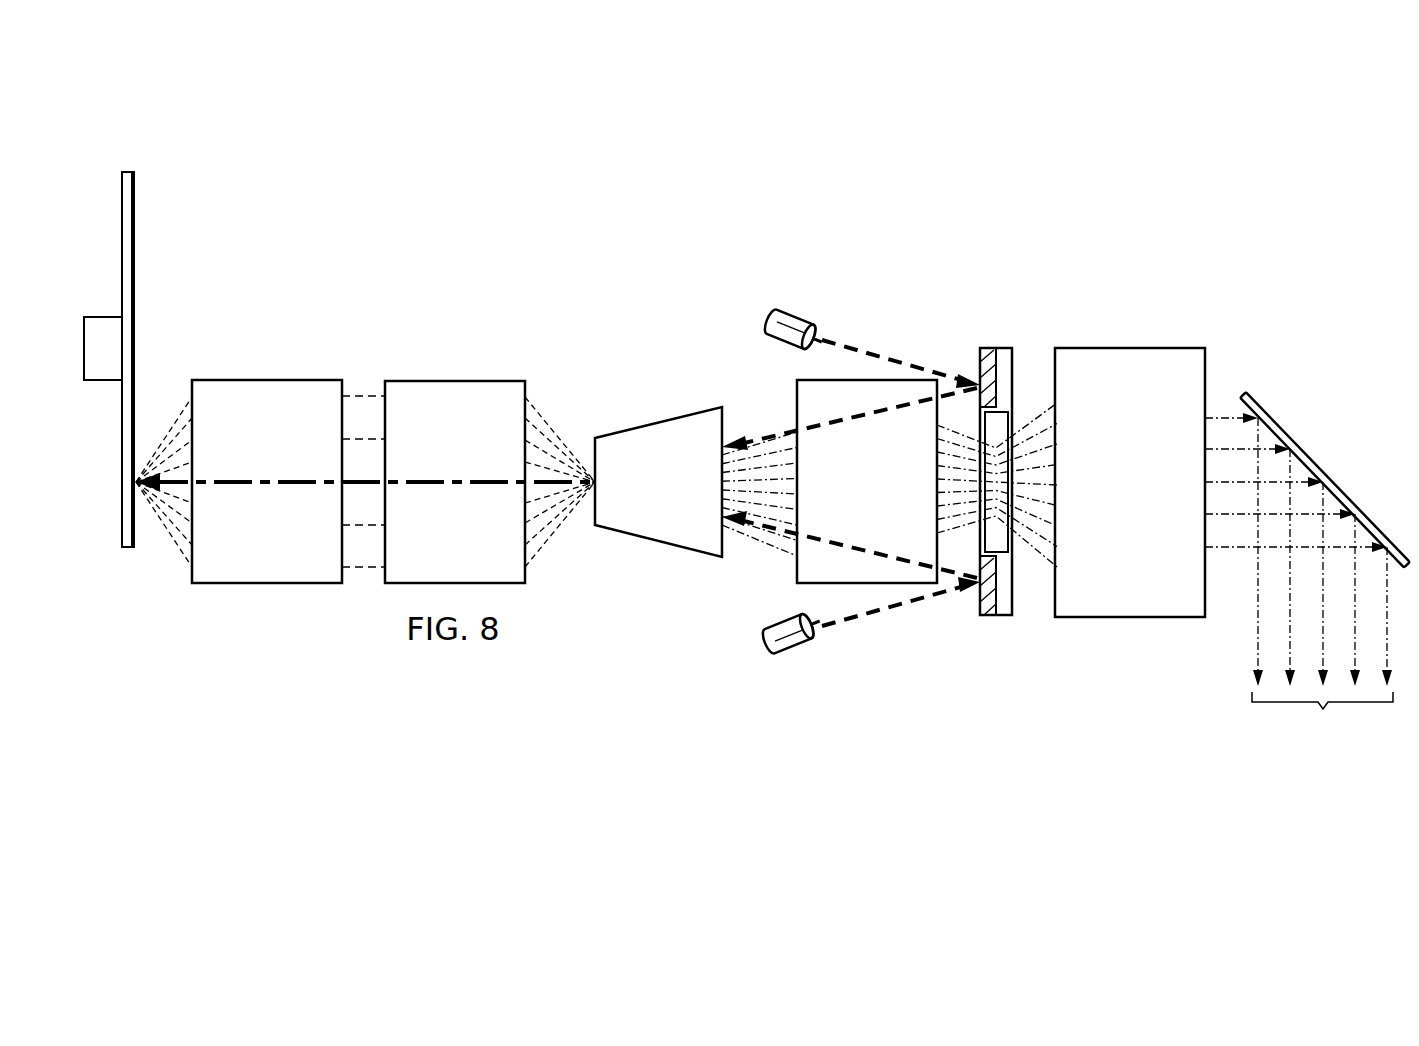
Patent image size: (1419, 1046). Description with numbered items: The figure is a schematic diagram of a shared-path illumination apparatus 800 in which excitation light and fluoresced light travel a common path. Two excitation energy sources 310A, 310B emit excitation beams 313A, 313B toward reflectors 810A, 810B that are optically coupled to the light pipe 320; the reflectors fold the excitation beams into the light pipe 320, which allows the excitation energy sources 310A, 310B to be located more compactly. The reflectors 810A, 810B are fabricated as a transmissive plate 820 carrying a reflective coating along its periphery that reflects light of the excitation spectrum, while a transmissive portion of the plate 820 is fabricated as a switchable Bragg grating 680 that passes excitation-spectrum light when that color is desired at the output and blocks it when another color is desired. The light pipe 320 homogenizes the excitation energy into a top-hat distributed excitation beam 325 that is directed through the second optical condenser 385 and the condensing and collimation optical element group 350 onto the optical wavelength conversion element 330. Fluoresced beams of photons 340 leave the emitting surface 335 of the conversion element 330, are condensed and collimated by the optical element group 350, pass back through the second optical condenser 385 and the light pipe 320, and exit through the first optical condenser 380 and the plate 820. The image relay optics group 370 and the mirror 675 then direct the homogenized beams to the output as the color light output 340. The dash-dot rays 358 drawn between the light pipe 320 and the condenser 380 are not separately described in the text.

The shared-path illumination apparatus 800 is at (1125, 200).
The optical wavelength conversion element 330 is at (128, 172).
The emitting surface 335 is at (135, 203).
The fluoresced beams of photons 340 is at (172, 545).
The top-hat distributed excitation beam 325 is at (240, 480).
The condensing and collimation optical element group 350 is at (267, 380).
The second optical condenser 385 is at (456, 381).
The light pipe 320 is at (660, 420).
The first optical condenser 380 is at (797, 392).
The light rays 358 is at (777, 527).
The excitation energy source 310A is at (797, 313).
The excitation beam 313A is at (870, 350).
The reflector 810A is at (985, 348).
The transmissive plate 820 is at (1012, 380).
The switchable Bragg grating 680 is at (1010, 548).
The reflector 810B is at (988, 615).
The excitation beam 313B is at (872, 620).
The excitation energy source 310B is at (798, 650).
The image relay optics group 370 is at (1110, 539).
The mirror 675 is at (1243, 392).